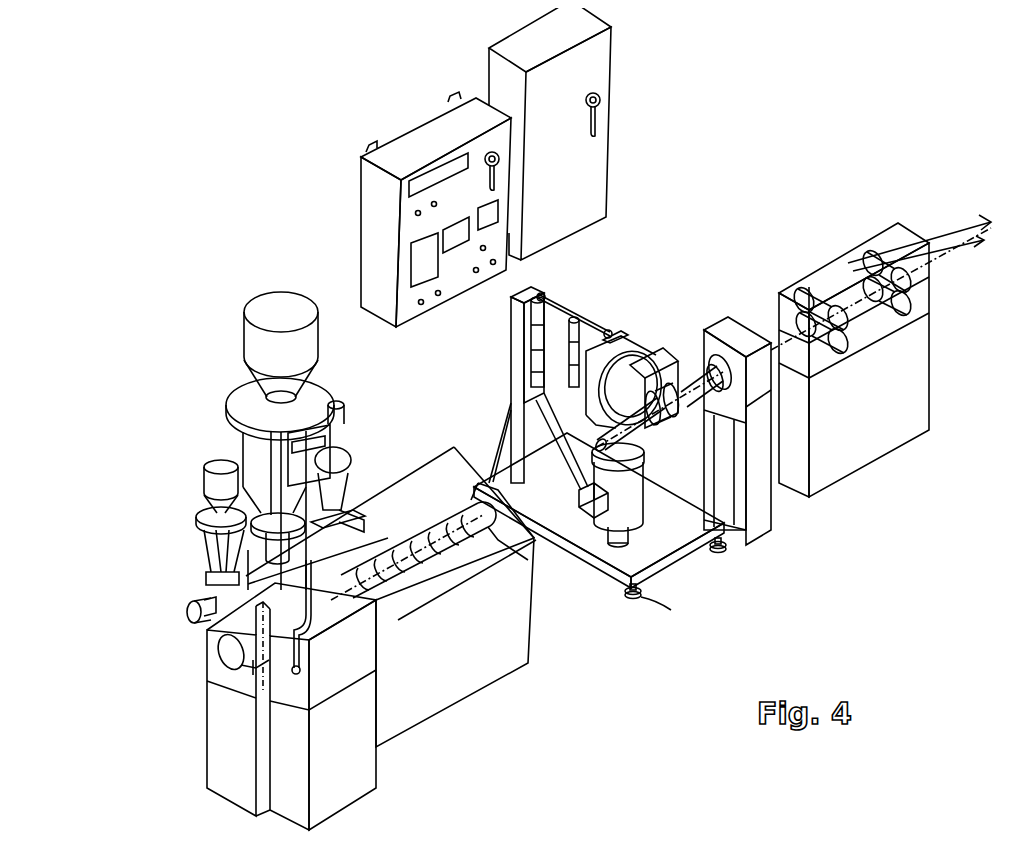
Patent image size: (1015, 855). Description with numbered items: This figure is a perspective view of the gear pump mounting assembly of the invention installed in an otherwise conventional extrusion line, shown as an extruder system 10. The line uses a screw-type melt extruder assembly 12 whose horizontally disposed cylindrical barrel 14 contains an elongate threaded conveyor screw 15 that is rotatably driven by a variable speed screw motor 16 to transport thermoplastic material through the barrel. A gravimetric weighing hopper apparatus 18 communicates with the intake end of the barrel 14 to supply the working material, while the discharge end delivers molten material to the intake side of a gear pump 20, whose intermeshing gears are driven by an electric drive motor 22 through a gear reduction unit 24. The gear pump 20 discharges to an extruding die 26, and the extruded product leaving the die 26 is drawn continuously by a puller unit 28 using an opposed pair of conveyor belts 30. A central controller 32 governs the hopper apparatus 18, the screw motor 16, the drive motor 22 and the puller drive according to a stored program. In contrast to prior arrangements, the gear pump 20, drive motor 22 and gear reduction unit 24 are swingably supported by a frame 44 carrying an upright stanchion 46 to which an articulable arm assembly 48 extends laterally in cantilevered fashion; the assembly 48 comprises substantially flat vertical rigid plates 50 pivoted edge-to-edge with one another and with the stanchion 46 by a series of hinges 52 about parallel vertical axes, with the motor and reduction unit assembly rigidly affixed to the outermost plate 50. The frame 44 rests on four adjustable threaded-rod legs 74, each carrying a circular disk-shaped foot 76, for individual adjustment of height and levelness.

The extruder system 10 is at (788, 622).
The screw-type melt extruder assembly 12 is at (477, 587).
The extruder barrel 14 is at (497, 538).
The conveyor screw 15 is at (445, 523).
The screw motor 16 is at (360, 662).
The gravimetric weighing hopper apparatus 18 is at (250, 447).
The gear pump 20 is at (677, 385).
The drive motor 22 is at (620, 515).
The gear reduction unit 24 is at (630, 405).
The extruding die 26 is at (760, 395).
The puller unit 28 is at (897, 323).
The conveyor belts 30 is at (836, 272).
The central controller 32 is at (405, 145).
The frame 44 is at (590, 535).
The upright stanchion 46 is at (510, 387).
The articulable arm assembly 48 is at (658, 327).
The rigid plates 50 is at (548, 300).
The hinges 52 is at (530, 340).
The adjustable legs 74 is at (668, 609).
The foot 76 is at (632, 600).